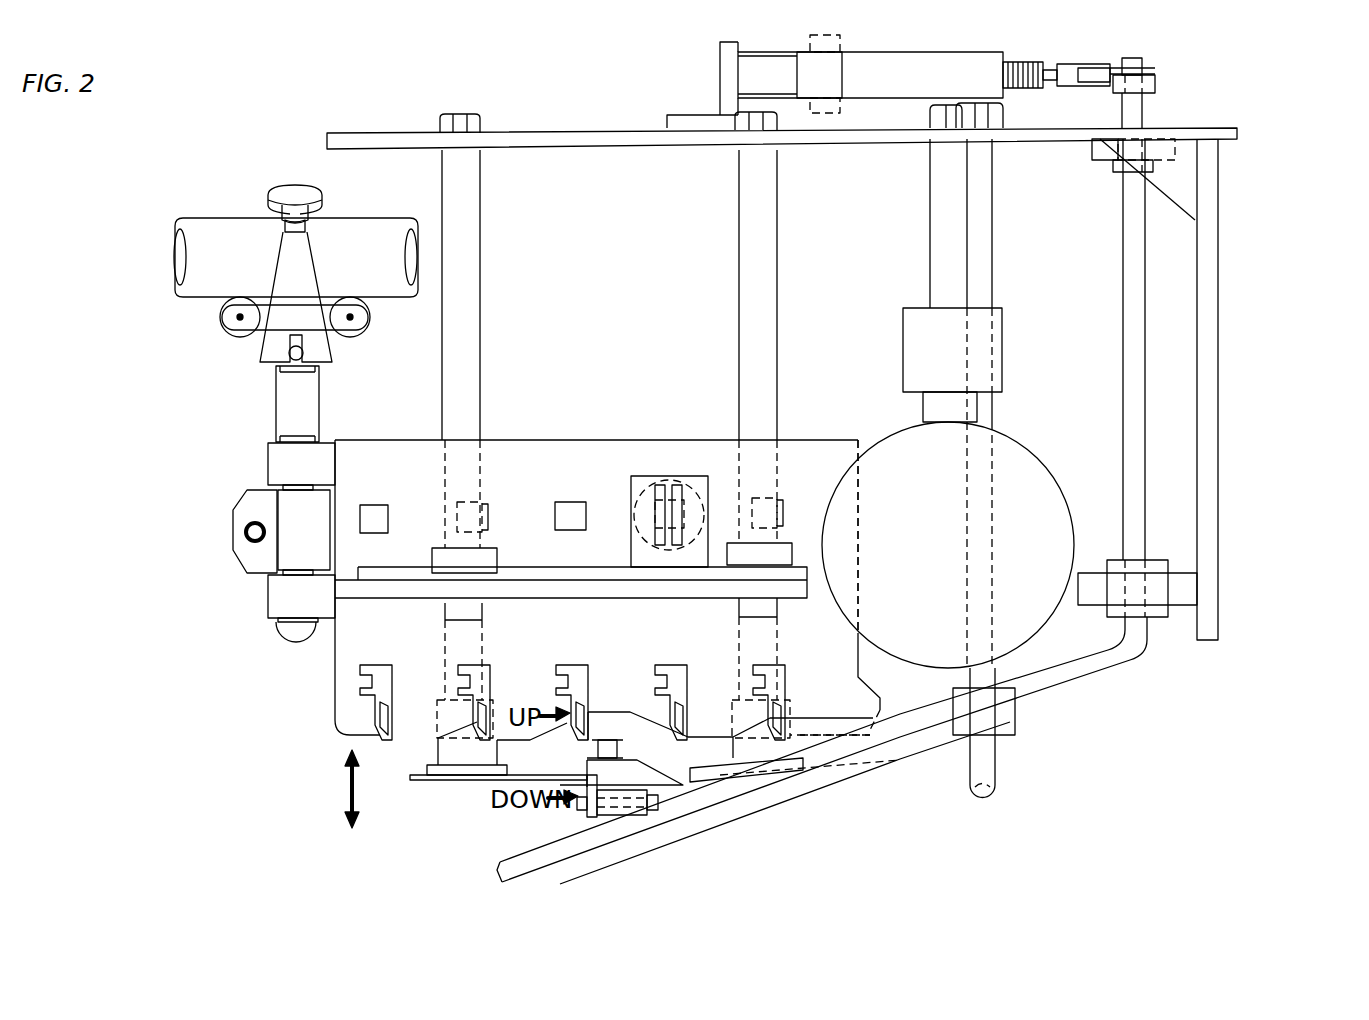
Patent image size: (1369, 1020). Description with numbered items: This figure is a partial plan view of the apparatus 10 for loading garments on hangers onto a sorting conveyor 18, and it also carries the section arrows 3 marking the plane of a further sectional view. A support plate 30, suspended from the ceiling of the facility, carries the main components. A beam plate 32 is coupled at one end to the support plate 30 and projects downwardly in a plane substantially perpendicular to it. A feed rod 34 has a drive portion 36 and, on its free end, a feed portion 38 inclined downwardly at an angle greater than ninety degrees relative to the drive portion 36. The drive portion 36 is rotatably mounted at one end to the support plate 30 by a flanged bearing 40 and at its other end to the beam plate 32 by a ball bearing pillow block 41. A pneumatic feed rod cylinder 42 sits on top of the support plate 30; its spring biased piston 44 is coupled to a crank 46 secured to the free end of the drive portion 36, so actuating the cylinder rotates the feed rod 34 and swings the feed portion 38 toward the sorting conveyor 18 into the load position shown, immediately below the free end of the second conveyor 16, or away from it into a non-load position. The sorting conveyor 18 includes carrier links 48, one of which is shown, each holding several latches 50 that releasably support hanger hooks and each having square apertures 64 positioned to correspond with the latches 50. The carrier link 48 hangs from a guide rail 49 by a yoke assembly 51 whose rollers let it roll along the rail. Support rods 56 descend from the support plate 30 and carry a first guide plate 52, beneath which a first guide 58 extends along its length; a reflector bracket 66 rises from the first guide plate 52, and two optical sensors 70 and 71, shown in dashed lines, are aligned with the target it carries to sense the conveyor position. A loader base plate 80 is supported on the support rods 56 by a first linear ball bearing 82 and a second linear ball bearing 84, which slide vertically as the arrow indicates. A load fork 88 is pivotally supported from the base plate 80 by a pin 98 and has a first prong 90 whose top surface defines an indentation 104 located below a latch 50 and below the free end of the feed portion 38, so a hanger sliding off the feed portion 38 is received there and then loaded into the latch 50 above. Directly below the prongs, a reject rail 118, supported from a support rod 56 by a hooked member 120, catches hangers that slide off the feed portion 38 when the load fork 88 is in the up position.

The apparatus 10 is at (1252, 98).
The second conveyor 16 is at (887, 442).
The sorting conveyor 18 is at (528, 434).
The support plate 30 is at (532, 128).
The beam plate 32 is at (1218, 318).
The feed rod 34 is at (1150, 284).
The drive portion 36 is at (1123, 278).
The feed portion 38 is at (1048, 674).
The flanged bearing 40 is at (1097, 160).
The ball bearing pillow block 41 is at (1182, 605).
The feed rod cylinder 42 is at (920, 58).
The spring biased piston 44 is at (1050, 64).
The crank 46 is at (1150, 72).
The carrier link 48 is at (365, 440).
The guide rail 49 is at (365, 218).
The latch 50 is at (490, 665).
The yoke assembly 51 is at (250, 390).
The first guide plate 52 is at (385, 573).
The support rod 56 is at (482, 240).
The first guide 58 is at (393, 600).
The square aperture 64 is at (380, 505).
The reflector bracket 66 is at (631, 548).
The optical sensor 70 is at (682, 480).
The optical sensor 71 is at (655, 480).
The loader base plate 80 is at (450, 780).
The first linear ball bearing 82 is at (438, 765).
The second linear ball bearing 84 is at (797, 735).
The load fork 88 is at (648, 760).
The first prong 90 is at (589, 749).
The pin 98 is at (578, 805).
The indentation 104 is at (690, 775).
The reject rail 118 is at (766, 792).
The hooked member 120 is at (995, 775).
The section line 3- 3 is at (1188, 378).